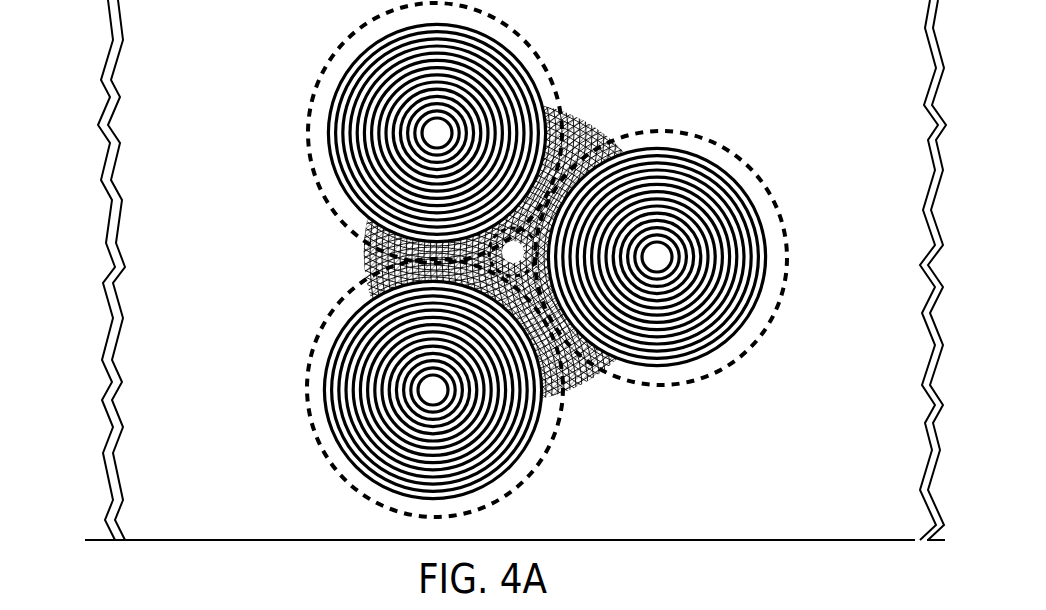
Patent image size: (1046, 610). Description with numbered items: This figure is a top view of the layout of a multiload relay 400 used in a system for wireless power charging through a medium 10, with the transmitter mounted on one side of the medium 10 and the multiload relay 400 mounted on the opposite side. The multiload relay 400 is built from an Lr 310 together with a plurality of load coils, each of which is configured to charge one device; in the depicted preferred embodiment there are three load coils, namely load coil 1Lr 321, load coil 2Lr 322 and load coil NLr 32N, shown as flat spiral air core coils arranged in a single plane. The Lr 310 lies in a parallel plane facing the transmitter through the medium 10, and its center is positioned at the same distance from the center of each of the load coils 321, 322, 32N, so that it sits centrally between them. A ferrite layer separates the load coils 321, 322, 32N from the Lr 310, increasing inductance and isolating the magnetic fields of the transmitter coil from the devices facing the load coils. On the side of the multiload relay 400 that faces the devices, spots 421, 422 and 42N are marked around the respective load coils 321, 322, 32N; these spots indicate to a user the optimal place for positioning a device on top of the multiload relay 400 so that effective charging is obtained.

The medium 10 is at (108, 212).
The multiload relay 400 is at (545, 305).
The Lr 310 is at (592, 112).
The load coil NLr 32N is at (330, 186).
The load coil 1Lr 321 is at (317, 432).
The load coil 2Lr 322 is at (748, 342).
The spot 42N is at (312, 118).
The spot 421 is at (311, 417).
The spot 422 is at (787, 247).